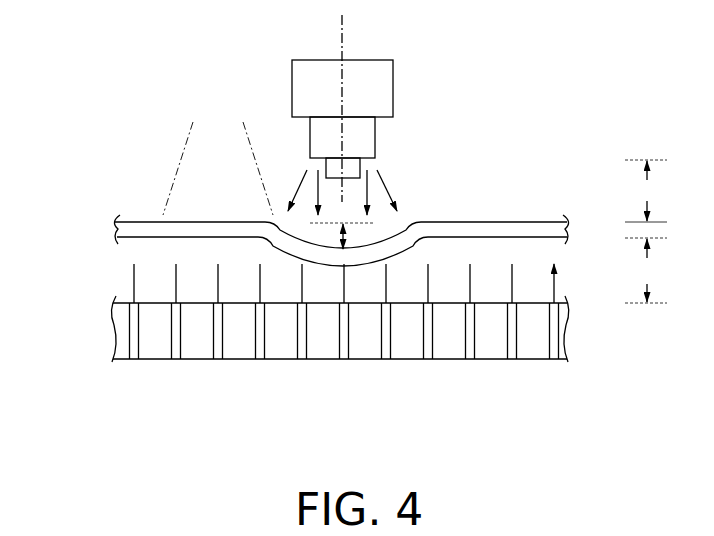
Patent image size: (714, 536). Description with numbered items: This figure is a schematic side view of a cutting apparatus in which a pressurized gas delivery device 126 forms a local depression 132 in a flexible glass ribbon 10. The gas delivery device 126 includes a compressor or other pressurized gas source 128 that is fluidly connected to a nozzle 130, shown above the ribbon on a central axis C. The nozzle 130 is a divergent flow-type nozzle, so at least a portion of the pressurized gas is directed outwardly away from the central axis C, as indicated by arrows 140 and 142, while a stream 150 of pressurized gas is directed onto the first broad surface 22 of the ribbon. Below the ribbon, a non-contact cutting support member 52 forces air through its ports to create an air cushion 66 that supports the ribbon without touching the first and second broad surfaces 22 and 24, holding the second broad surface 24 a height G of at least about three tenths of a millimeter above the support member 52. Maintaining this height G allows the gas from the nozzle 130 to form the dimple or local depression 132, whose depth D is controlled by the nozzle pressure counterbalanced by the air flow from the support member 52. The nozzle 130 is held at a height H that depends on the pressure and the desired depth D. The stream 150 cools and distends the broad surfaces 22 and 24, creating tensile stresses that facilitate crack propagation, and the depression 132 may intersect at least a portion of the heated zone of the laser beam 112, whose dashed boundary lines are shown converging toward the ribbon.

The flexible glass ribbon 10 is at (360, 225).
The first broad surface 22 is at (492, 222).
The second broad surface 24 is at (543, 234).
The cutting support member 52 is at (295, 359).
The air cushion 66 is at (108, 263).
The laser beam 112 is at (180, 165).
The pressurized gas delivery device 126 is at (415, 119).
The pressurized gas source 128 is at (393, 80).
The nozzle 130 is at (375, 140).
The local depression 132 is at (290, 268).
The arrow 140 is at (300, 176).
The arrow 142 is at (390, 198).
The stream of pressurized gas 150 is at (417, 208).
The central axis C is at (345, 36).
The depth D is at (348, 246).
The height H is at (646, 191).
The height G is at (646, 270).